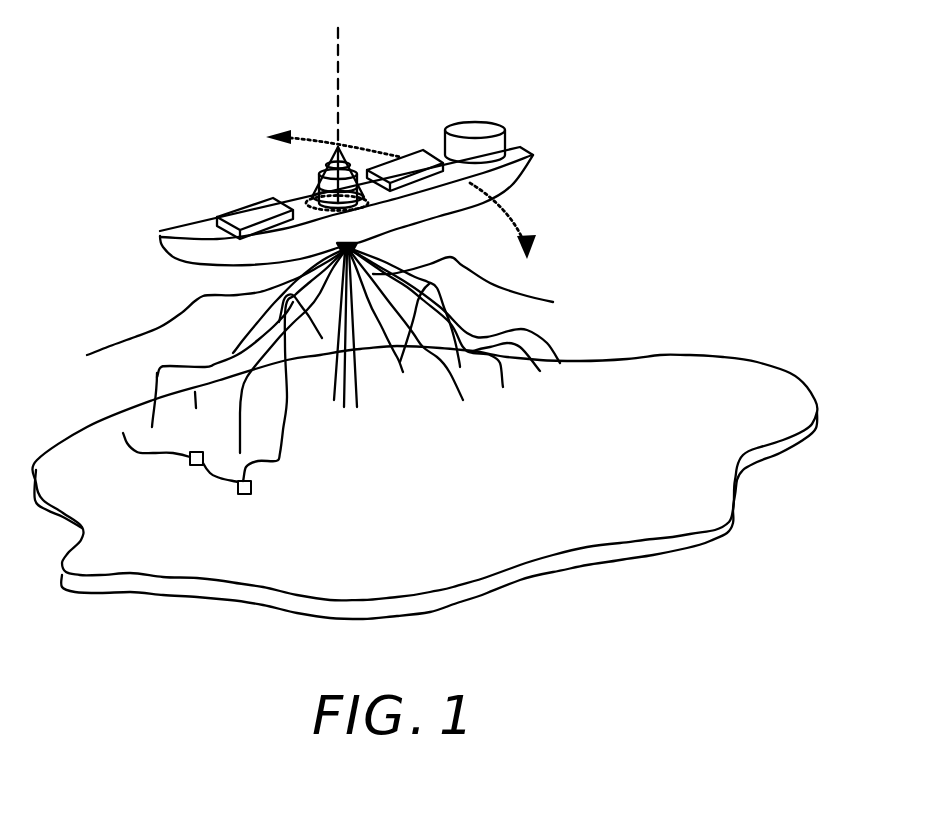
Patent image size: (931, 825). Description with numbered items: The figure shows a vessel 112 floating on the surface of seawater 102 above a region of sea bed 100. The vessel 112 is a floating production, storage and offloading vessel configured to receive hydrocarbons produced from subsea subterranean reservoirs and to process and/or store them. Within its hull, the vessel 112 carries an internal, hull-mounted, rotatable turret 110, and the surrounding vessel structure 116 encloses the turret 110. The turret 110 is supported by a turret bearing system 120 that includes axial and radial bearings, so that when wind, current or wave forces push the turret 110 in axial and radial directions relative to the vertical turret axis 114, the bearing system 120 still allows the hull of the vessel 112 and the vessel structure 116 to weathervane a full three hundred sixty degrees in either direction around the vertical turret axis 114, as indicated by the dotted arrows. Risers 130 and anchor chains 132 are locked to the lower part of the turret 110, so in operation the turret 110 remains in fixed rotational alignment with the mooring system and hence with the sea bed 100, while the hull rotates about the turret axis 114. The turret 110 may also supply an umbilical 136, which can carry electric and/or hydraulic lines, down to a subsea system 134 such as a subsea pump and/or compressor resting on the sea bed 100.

The seabed / terrain region 100 is at (612, 504).
The seawater 102 is at (405, 146).
The turret 110 is at (309, 192).
The vessel 112 is at (517, 170).
The vertical turret axis 114 is at (334, 85).
The vessel structure 116 is at (377, 192).
The turret bearing system 120 is at (306, 201).
The risers 130 is at (450, 323).
The anchor chains 132 is at (234, 293).
The subsea system 134 is at (251, 487).
The umbilical 136 is at (284, 437).